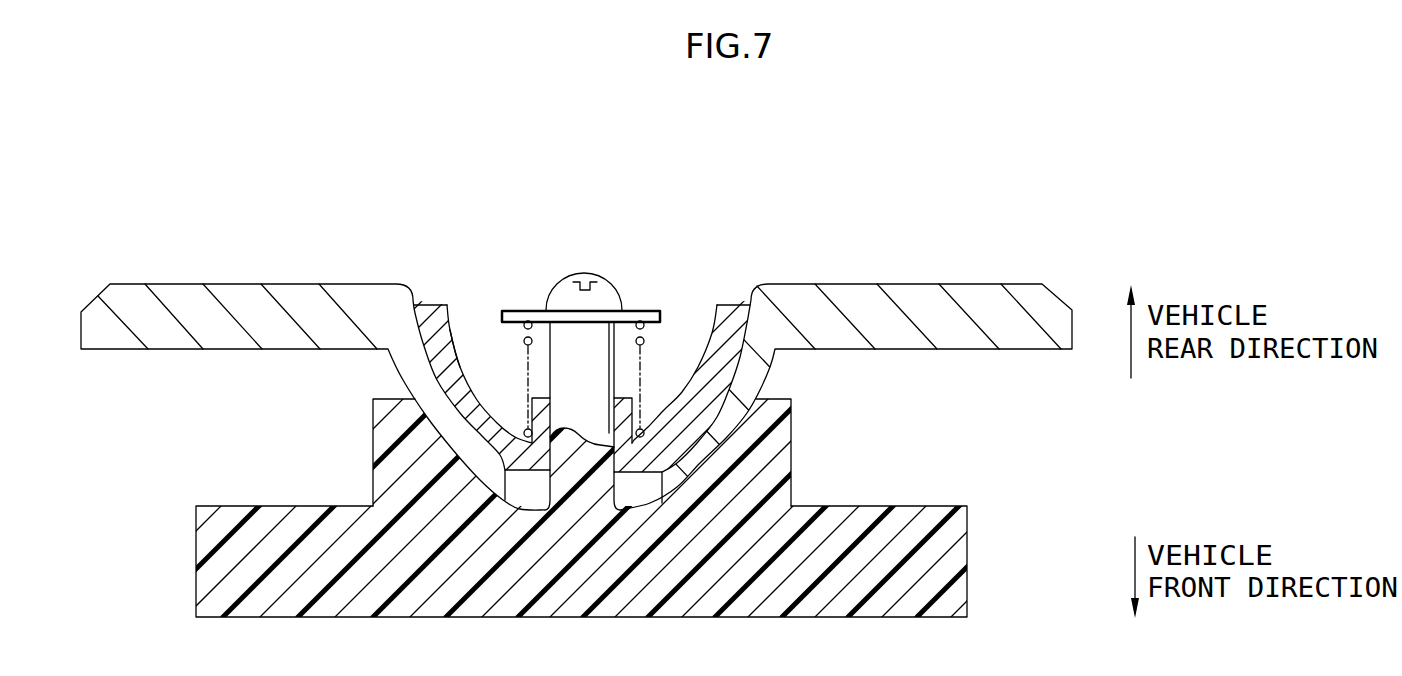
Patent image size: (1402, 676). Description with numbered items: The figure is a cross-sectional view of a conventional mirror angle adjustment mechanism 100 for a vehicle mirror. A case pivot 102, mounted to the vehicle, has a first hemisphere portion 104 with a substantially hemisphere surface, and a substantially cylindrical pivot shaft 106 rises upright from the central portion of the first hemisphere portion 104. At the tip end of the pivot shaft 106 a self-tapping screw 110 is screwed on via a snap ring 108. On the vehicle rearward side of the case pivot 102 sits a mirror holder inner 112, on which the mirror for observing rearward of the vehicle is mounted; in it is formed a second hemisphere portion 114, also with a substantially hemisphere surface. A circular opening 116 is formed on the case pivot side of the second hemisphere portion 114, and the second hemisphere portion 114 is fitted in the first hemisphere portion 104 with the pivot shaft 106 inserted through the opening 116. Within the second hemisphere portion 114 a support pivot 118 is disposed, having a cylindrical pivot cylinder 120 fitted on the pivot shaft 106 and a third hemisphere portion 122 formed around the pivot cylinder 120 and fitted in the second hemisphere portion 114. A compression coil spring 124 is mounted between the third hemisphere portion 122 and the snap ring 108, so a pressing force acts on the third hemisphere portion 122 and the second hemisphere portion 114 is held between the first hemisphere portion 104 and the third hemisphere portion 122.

The mirror angle adjustment mechanism 100 is at (406, 184).
The case pivot 102 is at (973, 494).
The first hemisphere portion 104 is at (738, 430).
The pivot shaft 106 is at (600, 352).
The snap ring 108 is at (632, 309).
The self-tapping screw 110 is at (610, 296).
The mirror holder inner 112 is at (305, 276).
The second hemisphere portion 114 is at (400, 385).
The opening 116 is at (515, 480).
The support pivot 118 is at (437, 294).
The pivot cylinder 120 is at (640, 418).
The third hemisphere portion 122 is at (447, 342).
The compression coil spring 124 is at (523, 315).